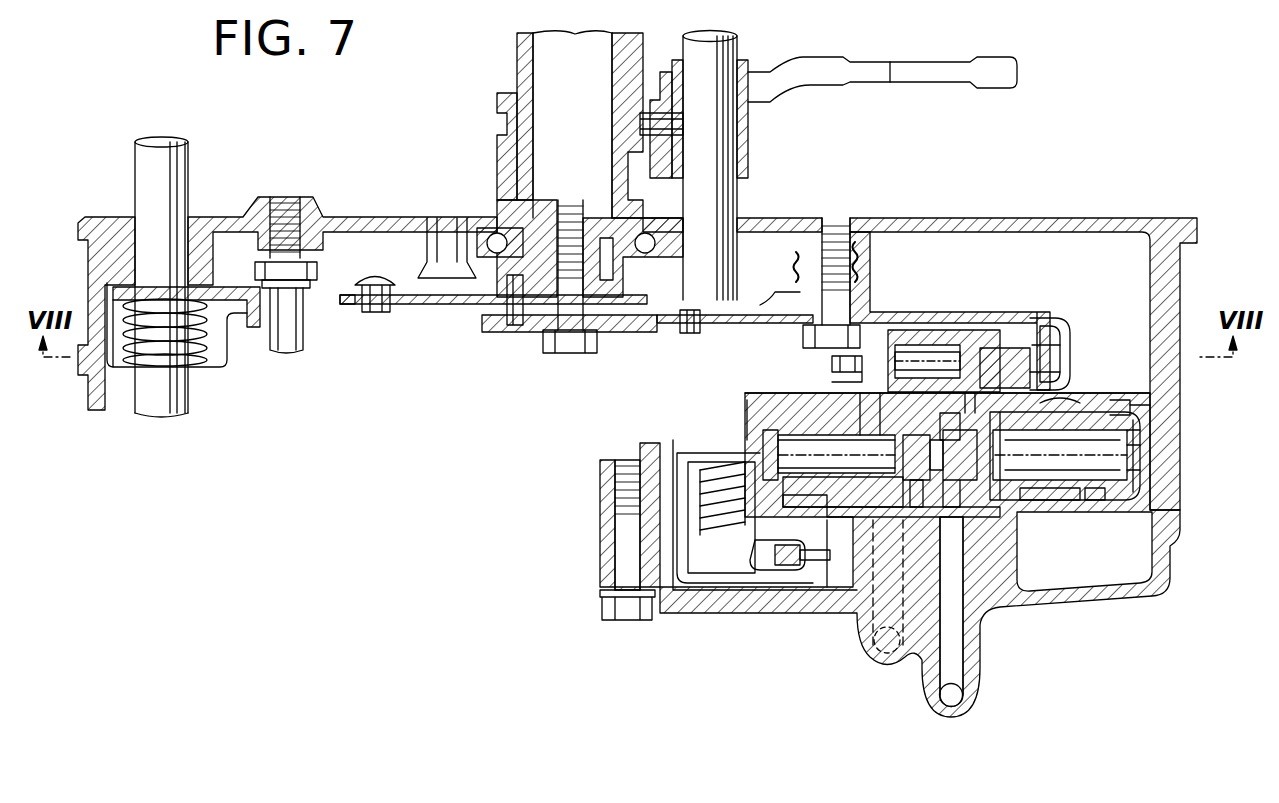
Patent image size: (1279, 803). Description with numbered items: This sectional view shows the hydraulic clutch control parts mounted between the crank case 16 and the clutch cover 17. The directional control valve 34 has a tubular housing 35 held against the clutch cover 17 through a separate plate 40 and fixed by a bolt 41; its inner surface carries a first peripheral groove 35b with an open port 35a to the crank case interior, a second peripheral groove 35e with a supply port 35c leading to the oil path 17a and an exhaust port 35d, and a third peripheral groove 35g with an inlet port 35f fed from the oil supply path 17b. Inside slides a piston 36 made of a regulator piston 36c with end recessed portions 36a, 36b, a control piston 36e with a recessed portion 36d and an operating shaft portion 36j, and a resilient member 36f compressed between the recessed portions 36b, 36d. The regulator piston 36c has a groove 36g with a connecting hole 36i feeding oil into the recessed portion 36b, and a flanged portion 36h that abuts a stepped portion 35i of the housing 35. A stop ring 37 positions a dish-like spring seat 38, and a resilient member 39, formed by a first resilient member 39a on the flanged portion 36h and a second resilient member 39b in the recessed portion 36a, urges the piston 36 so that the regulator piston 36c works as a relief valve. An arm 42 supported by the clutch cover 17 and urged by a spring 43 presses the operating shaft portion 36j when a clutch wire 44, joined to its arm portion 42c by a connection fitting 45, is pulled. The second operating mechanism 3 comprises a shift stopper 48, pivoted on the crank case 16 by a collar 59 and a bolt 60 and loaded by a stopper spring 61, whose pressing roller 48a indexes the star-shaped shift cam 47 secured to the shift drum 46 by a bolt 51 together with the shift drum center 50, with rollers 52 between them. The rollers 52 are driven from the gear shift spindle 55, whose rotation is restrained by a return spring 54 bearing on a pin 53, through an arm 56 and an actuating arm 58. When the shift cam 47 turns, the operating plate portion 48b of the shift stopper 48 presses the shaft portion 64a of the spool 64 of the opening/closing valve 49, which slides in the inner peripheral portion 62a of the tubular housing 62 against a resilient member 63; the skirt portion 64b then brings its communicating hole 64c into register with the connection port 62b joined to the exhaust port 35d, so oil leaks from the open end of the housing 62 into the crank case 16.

The second operating mechanism 3 is at (1105, 316).
The crank case 16 is at (1182, 288).
The clutch cover 17 is at (1110, 598).
The oil path 17a is at (963, 675).
The oil supply path 17b is at (875, 645).
The directional control valve 34 is at (1129, 394).
The housing 35 is at (1085, 500).
The open port 35a is at (985, 520).
The first peripheral groove 35b is at (1035, 500).
The supply port 35c is at (960, 520).
The exhaust port 35d is at (927, 419).
The second peripheral groove 35e is at (947, 468).
The inlet port 35f is at (833, 493).
The third peripheral groove 35g is at (870, 473).
The stepped portion 35i is at (1030, 460).
The piston 36 is at (790, 375).
The recessed portion 36a is at (1140, 432).
The recessed portion 36b is at (843, 492).
The regulator piston 36c is at (813, 417).
The recessed portion 36d is at (753, 455).
The control piston 36e is at (745, 400).
The resilient member 36f is at (790, 390).
The groove 36g is at (930, 520).
The flanged portion 36h is at (1060, 398).
The connecting hole 36i is at (922, 457).
The operating shaft portion 36j is at (745, 445).
The stop ring 37 is at (1105, 492).
The spring seat 38 is at (1132, 408).
The resilient member 39 is at (1226, 456).
The first resilient member 39a is at (1140, 470).
The second resilient member 39b is at (1140, 445).
The separate plate 40 is at (905, 520).
The bolt 41 is at (832, 363).
The arm 42 is at (680, 540).
The arm portion 42c is at (690, 452).
The spring 43 is at (750, 512).
The clutch wire 44 is at (828, 562).
The connection fitting 45 is at (775, 578).
The shift drum 46 is at (517, 70).
The shift cam 47 is at (537, 334).
The shift stopper 48 is at (935, 312).
The pressing roller 48a is at (690, 334).
The operating plate portion 48b is at (1050, 345).
The opening/closing valve 49 is at (996, 323).
The shift drum center 50 is at (640, 285).
The bolt 51 is at (570, 355).
The rollers 52 is at (512, 330).
The pin 53 is at (286, 352).
The return spring 54 is at (218, 362).
The gear shift spindle 55 is at (150, 414).
The arm 56 is at (337, 302).
The actuating arm 58 is at (445, 305).
The collar 59 is at (862, 275).
The bolt 60 is at (802, 336).
The stopper spring 61 is at (796, 285).
The tubular housing 62 is at (990, 348).
The inner peripheral portion 62a is at (905, 345).
The connection port 62b is at (982, 408).
The resilient member 63 is at (928, 345).
The spool 64 is at (1040, 330).
The shaft portion 64a is at (1055, 372).
The skirt portion 64b is at (867, 414).
The communicating hole 64c is at (1060, 330).